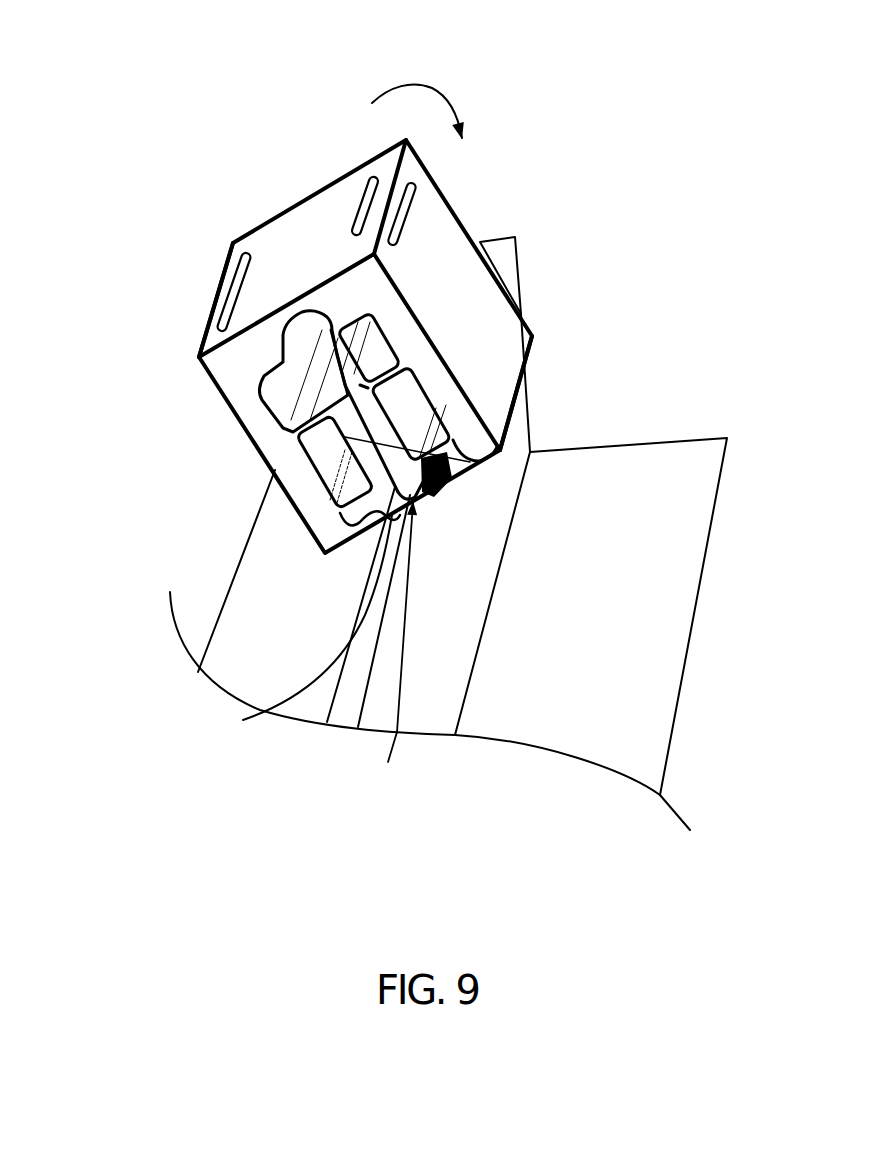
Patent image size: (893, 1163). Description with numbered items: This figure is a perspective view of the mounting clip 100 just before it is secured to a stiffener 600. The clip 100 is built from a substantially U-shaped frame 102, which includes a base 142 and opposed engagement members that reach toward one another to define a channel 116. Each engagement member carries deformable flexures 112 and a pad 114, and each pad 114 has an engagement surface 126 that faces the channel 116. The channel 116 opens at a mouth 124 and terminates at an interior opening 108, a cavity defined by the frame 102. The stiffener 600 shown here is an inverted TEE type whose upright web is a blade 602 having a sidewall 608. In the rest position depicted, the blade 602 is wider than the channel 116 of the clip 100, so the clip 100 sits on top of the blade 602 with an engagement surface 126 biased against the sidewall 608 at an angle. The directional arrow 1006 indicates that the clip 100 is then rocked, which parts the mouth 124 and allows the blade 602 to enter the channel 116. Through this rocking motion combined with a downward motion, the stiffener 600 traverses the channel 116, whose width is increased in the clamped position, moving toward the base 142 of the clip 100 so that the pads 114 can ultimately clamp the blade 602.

The clip 100 is at (268, 195).
The frame 102 is at (280, 285).
The interior opening 108 is at (335, 318).
The flexures 112 is at (385, 384).
The pad 114 is at (371, 440).
The channel 116 is at (473, 465).
The mouth 124 is at (387, 653).
The engagement surface 126 is at (293, 640).
The base 142 is at (253, 335).
The stiffener 600 is at (495, 665).
The blade 602 is at (372, 600).
The sidewall 608 is at (350, 645).
The directional arrow 1006 is at (418, 83).